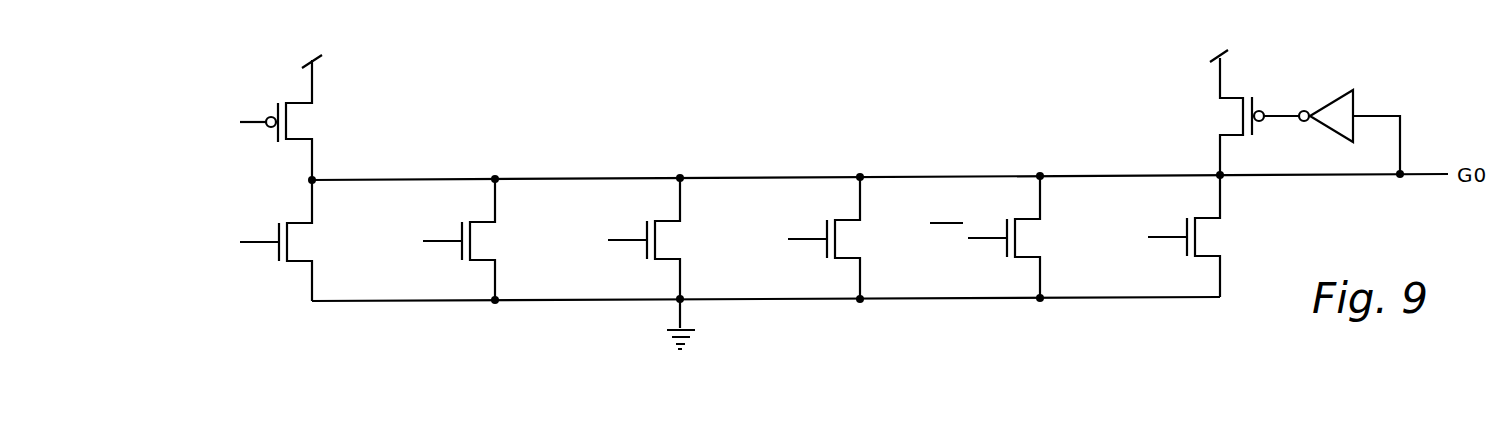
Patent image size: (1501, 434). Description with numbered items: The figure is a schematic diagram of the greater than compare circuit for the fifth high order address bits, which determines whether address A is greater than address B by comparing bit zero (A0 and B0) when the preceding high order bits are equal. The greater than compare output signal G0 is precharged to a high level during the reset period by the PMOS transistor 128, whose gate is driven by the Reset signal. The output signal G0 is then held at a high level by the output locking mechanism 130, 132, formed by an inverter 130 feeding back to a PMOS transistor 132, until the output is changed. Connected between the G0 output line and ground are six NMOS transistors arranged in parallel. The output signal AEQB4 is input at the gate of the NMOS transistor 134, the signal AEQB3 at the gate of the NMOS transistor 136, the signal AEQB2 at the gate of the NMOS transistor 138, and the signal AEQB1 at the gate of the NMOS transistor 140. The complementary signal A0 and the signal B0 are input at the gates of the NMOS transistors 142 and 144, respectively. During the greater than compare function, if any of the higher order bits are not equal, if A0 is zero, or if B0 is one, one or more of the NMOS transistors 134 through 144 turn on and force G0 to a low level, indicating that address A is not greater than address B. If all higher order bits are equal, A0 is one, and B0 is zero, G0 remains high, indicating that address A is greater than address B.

The PMOS transistor 128 is at (291, 77).
The output locking mechanism 130 is at (1312, 124).
The output locking mechanism 132 is at (1244, 72).
The NMOS transistor 134 is at (292, 262).
The NMOS transistor 136 is at (475, 261).
The NMOS transistor 138 is at (660, 260).
The NMOS transistor 140 is at (840, 259).
The NMOS transistor 142 is at (1020, 258).
The NMOS transistor 144 is at (1200, 257).